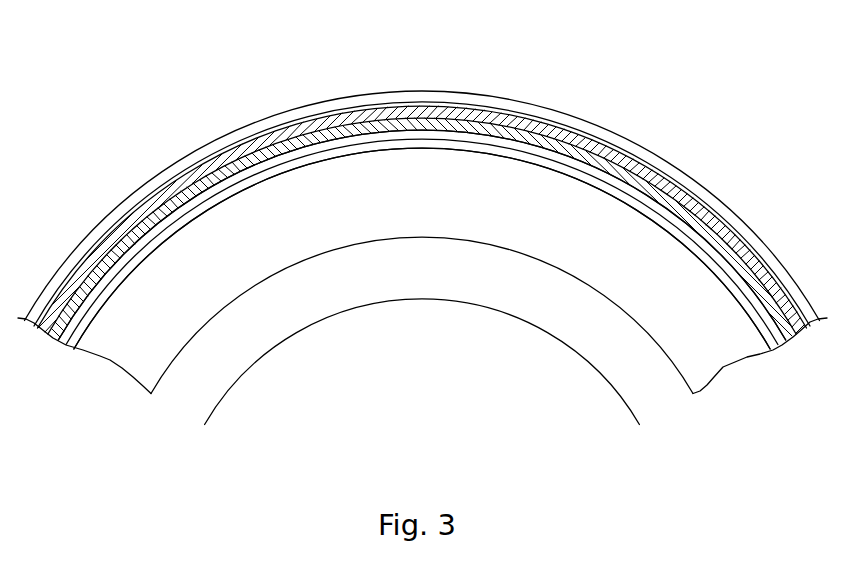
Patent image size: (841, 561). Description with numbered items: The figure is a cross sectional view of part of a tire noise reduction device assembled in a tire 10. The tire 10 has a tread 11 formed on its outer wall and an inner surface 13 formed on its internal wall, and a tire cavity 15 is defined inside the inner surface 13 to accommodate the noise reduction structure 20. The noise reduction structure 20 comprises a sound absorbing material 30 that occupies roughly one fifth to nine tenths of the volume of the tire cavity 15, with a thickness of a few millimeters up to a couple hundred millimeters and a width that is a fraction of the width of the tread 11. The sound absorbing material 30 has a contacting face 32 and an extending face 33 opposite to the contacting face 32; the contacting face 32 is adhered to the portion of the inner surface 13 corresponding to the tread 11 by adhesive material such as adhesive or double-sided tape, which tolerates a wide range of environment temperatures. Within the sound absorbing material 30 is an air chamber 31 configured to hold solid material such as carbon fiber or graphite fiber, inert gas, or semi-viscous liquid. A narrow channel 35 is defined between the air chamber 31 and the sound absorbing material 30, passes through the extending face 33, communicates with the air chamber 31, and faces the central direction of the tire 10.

The tire 10 is at (422, 230).
The tread 11 is at (368, 92).
The inner surface 13 is at (453, 108).
The contacting face 32 is at (421, 227).
The tire cavity 15 is at (262, 245).
The noise reduction structure 20 is at (382, 158).
The sound absorbing material 30 is at (422, 221).
The air chamber 31 is at (572, 153).
The extending face 33 is at (522, 160).
The channel 35 is at (570, 170).